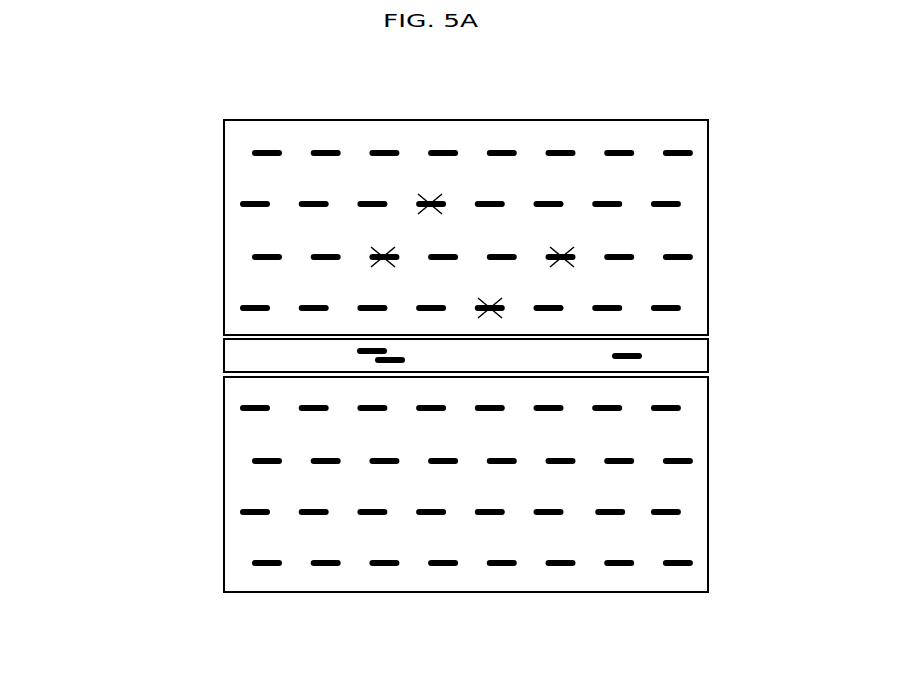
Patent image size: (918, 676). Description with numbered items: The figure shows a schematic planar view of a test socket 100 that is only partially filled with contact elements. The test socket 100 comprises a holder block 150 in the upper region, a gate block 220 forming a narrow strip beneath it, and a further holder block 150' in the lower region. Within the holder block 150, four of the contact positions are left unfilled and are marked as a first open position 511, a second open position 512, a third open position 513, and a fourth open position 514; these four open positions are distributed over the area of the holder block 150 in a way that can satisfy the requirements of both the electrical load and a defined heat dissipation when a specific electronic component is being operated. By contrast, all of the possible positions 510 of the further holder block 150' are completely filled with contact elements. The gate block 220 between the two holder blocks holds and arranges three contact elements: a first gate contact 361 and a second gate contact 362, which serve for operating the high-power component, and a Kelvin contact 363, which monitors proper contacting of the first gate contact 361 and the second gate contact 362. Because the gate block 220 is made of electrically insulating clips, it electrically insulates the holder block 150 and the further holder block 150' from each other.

The test socket 100 is at (122, 108).
The holder block 150 is at (524, 227).
The further holder block 150' is at (505, 484).
The gate block 220 is at (237, 356).
The first gate contact 361 is at (627, 357).
The second gate contact 362 is at (385, 363).
The Kelvin contact 363 is at (365, 351).
The possible positions 510 is at (605, 517).
The first open position 511 is at (381, 257).
The second open position 512 is at (429, 202).
The third open position 513 is at (492, 308).
The fourth open position 514 is at (565, 257).